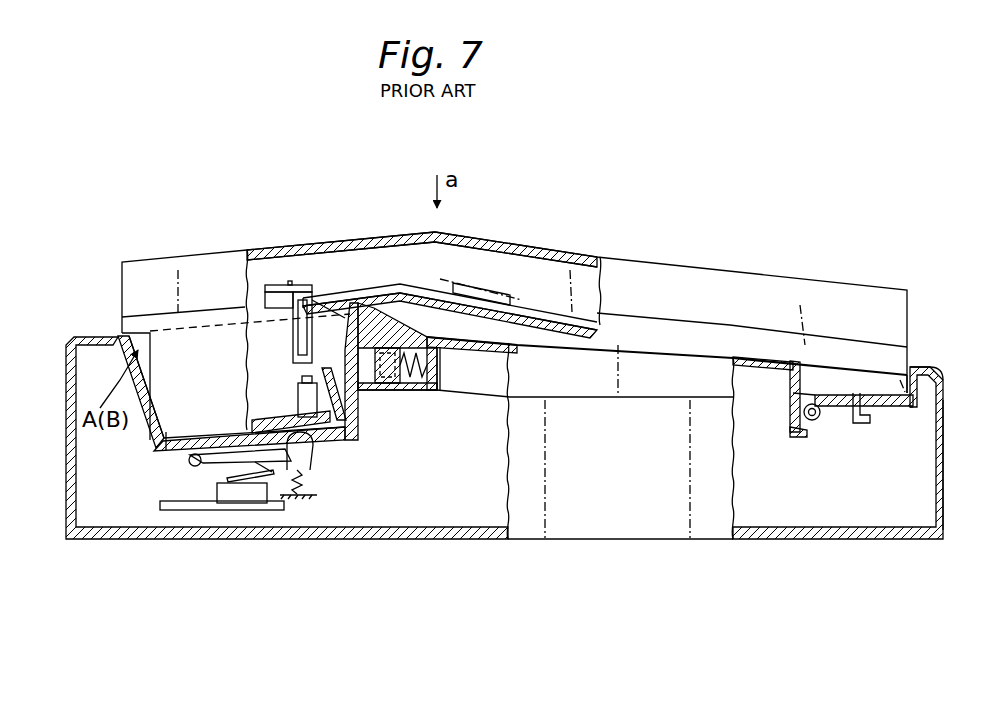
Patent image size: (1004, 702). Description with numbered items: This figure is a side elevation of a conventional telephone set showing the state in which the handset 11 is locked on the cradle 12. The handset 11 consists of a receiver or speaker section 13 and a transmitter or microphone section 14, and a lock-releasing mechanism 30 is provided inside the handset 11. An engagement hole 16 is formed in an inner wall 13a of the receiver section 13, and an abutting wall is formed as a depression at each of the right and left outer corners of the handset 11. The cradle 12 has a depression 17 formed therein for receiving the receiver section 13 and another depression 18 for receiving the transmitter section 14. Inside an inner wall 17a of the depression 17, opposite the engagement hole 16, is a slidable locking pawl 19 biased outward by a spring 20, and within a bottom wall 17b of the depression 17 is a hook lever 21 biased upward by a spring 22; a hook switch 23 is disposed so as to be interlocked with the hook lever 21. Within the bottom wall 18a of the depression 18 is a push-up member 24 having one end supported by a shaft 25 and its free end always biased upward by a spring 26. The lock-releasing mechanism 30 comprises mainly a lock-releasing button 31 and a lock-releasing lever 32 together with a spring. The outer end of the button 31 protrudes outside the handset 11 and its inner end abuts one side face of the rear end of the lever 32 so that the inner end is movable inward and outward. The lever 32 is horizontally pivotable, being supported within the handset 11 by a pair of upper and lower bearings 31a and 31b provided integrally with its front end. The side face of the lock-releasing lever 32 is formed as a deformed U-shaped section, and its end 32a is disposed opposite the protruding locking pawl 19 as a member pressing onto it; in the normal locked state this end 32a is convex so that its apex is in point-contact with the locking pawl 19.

The handset 11 is at (701, 201).
The cradle 12 is at (551, 614).
The receiver section 13 is at (216, 462).
The inner wall 13a is at (297, 323).
The transmitter section 14 is at (905, 480).
The engagement hole 16 is at (295, 334).
The depression 17 is at (234, 359).
The inner wall 17a is at (387, 384).
The bottom wall 17b is at (305, 507).
The depression 18 is at (942, 340).
The bottom wall 18a is at (947, 432).
The locking pawl 19 is at (414, 404).
The spring 20 is at (610, 393).
The hook lever 21 is at (274, 510).
The spring 22 is at (301, 510).
The hook switch 23 is at (222, 525).
The push-up member 24 is at (853, 489).
The shaft 25 is at (844, 447).
The spring 26 is at (796, 431).
The lock-releasing mechanism 30 is at (414, 196).
The lock-releasing button 31 is at (489, 247).
The upper bearing 31a is at (288, 243).
The lower bearing 31b is at (260, 404).
The lock-releasing lever 32 is at (450, 257).
The end 32a is at (378, 433).